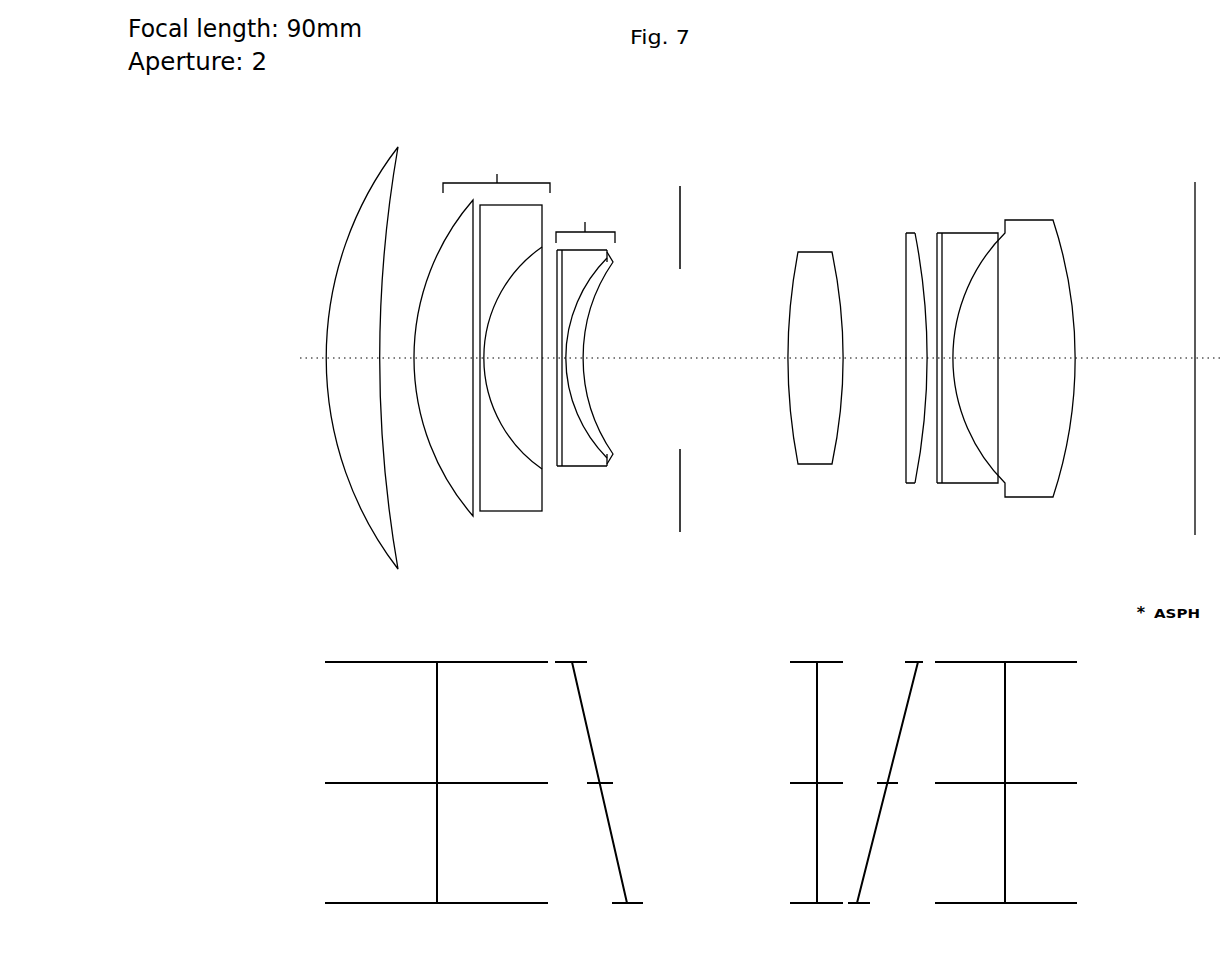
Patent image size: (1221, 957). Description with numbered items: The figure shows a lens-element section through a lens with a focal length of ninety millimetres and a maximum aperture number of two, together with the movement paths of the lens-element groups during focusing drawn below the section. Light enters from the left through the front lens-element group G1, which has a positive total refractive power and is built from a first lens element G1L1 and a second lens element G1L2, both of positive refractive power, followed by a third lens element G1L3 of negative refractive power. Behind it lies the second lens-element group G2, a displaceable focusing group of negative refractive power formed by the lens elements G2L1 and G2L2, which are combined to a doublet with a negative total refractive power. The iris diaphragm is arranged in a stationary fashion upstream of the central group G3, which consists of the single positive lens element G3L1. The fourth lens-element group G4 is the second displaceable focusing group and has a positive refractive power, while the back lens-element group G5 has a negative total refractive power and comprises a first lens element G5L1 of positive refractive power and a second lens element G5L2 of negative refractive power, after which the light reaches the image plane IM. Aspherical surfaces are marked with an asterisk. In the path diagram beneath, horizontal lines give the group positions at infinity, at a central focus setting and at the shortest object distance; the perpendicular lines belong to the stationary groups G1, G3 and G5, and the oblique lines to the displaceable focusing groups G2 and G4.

The first lens-element group G1 is at (325, 625).
The first lens element of the front lens-element group G1L1 is at (400, 368).
The second lens element of the front lens-element group G1L2 is at (468, 369).
The third lens element of the front lens-element group G1L3 is at (522, 372).
The second lens-element group G2 is at (547, 625).
The first lens element of the second lens-element group G2L1 is at (564, 369).
The second lens element of the second lens-element group G2L2 is at (609, 370).
The third lens-element group G3 is at (790, 625).
The lens element of the central group G3L1 is at (815, 371).
The fourth lens-element group G4 is at (933, 625).
The fifth lens-element group G5 is at (937, 625).
The first lens element of the back lens-element group G5L1 is at (967, 372).
The second lens element of the back lens-element group G5L2 is at (1014, 371).
The image plane IM is at (1194, 376).